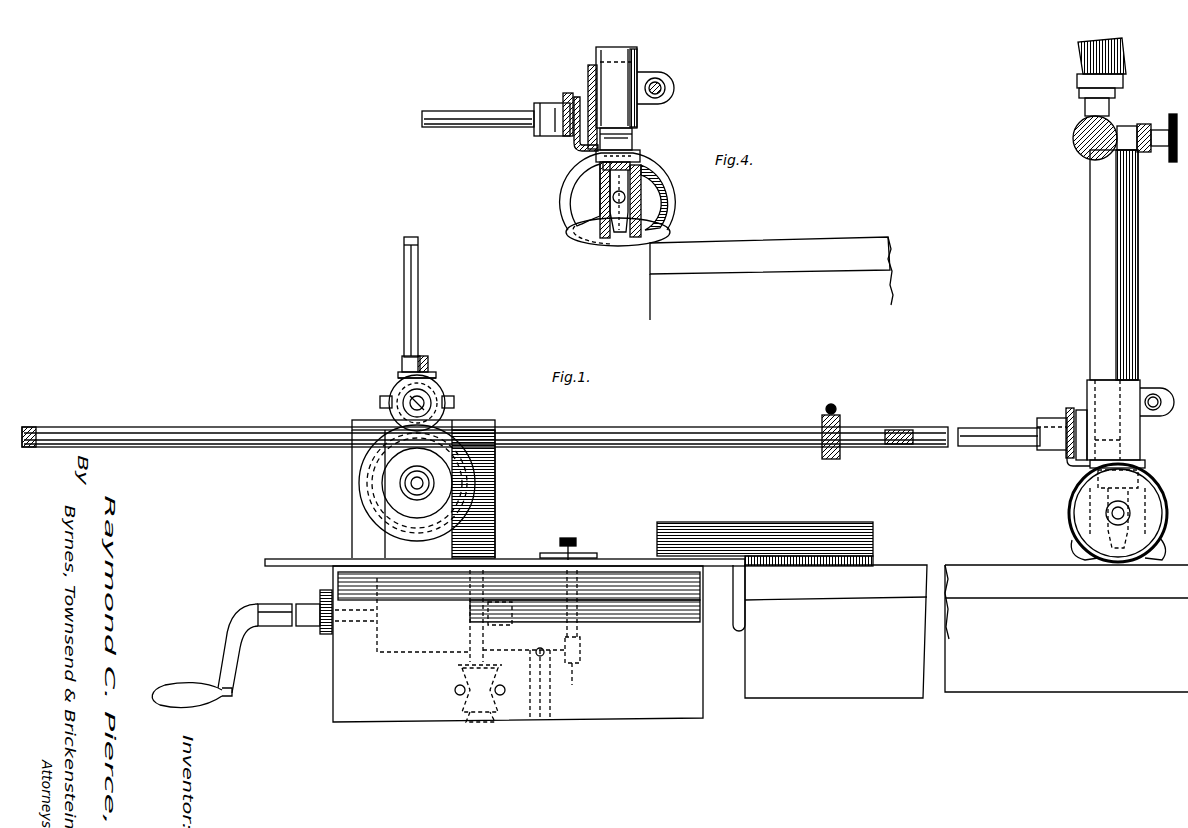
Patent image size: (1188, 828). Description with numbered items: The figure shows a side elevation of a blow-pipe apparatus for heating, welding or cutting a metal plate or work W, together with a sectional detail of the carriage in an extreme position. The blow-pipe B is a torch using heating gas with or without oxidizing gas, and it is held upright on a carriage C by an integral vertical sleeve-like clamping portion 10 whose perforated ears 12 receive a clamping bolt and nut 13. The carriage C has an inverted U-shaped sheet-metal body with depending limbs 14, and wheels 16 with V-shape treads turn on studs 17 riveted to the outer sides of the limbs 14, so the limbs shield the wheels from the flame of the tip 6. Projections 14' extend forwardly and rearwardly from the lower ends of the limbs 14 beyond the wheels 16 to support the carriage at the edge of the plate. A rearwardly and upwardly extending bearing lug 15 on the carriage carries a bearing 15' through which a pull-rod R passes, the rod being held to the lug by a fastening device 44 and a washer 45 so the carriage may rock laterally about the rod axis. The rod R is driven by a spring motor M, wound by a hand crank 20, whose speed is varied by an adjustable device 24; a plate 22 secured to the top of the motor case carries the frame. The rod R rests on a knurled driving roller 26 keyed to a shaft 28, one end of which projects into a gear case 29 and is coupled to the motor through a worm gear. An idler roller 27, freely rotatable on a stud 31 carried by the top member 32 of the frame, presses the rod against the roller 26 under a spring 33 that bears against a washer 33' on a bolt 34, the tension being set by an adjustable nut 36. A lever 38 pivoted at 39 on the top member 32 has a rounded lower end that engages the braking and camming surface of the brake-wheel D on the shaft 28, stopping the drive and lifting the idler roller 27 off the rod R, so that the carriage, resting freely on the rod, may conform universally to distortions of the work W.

In FIG. 4, the blow-pipe B is at (637, 55).
In FIG. 1, the blow-pipe B is at (1140, 308).
In FIG. 4, the carriage C is at (640, 155).
In FIG. 1, the carriage C is at (1145, 466).
In FIG. 4, the pull-rod R is at (479, 115).
In FIG. 1, the pull-rod R is at (780, 430).
In FIG. 4, the work W is at (786, 230).
In FIG. 1, the work W is at (981, 550).
In FIG. 1, the brake-wheel D is at (360, 482).
In FIG. 1, the motor M is at (402, 648).
In FIG. 4, the cutting tip 6 is at (617, 243).
In FIG. 1, the cutting tip 6 is at (1108, 540).
In FIG. 4, the clamping portion 10 is at (588, 76).
In FIG. 1, the clamping portion 10 is at (1089, 380).
In FIG. 4, the perforated ears 12 is at (666, 80).
In FIG. 1, the perforated ears 12 is at (1153, 392).
In FIG. 4, the clamping bolt and nut 13 is at (665, 96).
In FIG. 1, the clamping bolt and nut 13 is at (1156, 416).
In FIG. 4, the depending limbs 14 is at (649, 200).
In FIG. 1, the depending limbs 14 is at (1086, 502).
In FIG. 4, the projections 14' is at (621, 230).
In FIG. 1, the projections 14' is at (1101, 558).
In FIG. 4, the bearing lug 15 is at (552, 142).
In FIG. 1, the bearing lug 15 is at (1065, 465).
In FIG. 4, the bearing 15' is at (547, 134).
In FIG. 1, the bearing 15' is at (1037, 424).
In FIG. 4, the wheels 16 is at (668, 190).
In FIG. 1, the wheels 16 is at (1098, 548).
In FIG. 1, the studs 17 is at (1118, 540).
In FIG. 1, the hand crank 20 is at (236, 636).
In FIG. 1, the plate 22 is at (326, 548).
In FIG. 1, the adjustable device 24 is at (572, 540).
In FIG. 1, the driving roller 26 is at (405, 488).
In FIG. 1, the idler roller 27 is at (392, 396).
In FIG. 1, the shaft 28 is at (412, 490).
In FIG. 1, the gear case 29 is at (480, 422).
In FIG. 1, the stud 31 is at (424, 405).
In FIG. 1, the top member 32 is at (831, 431).
In FIG. 1, the spring 33 is at (433, 391).
In FIG. 1, the washer 33' is at (402, 367).
In FIG. 1, the bolt 34 is at (424, 358).
In FIG. 1, the adjustable nut 36 is at (408, 358).
In FIG. 1, the lever 38 is at (416, 298).
In FIG. 1, the pivot 39 is at (380, 402).
In FIG. 4, the fastening device 44 is at (598, 160).
In FIG. 1, the fastening device 44 is at (1080, 410).
In FIG. 4, the washer 45 is at (565, 95).
In FIG. 1, the washer 45 is at (1068, 410).